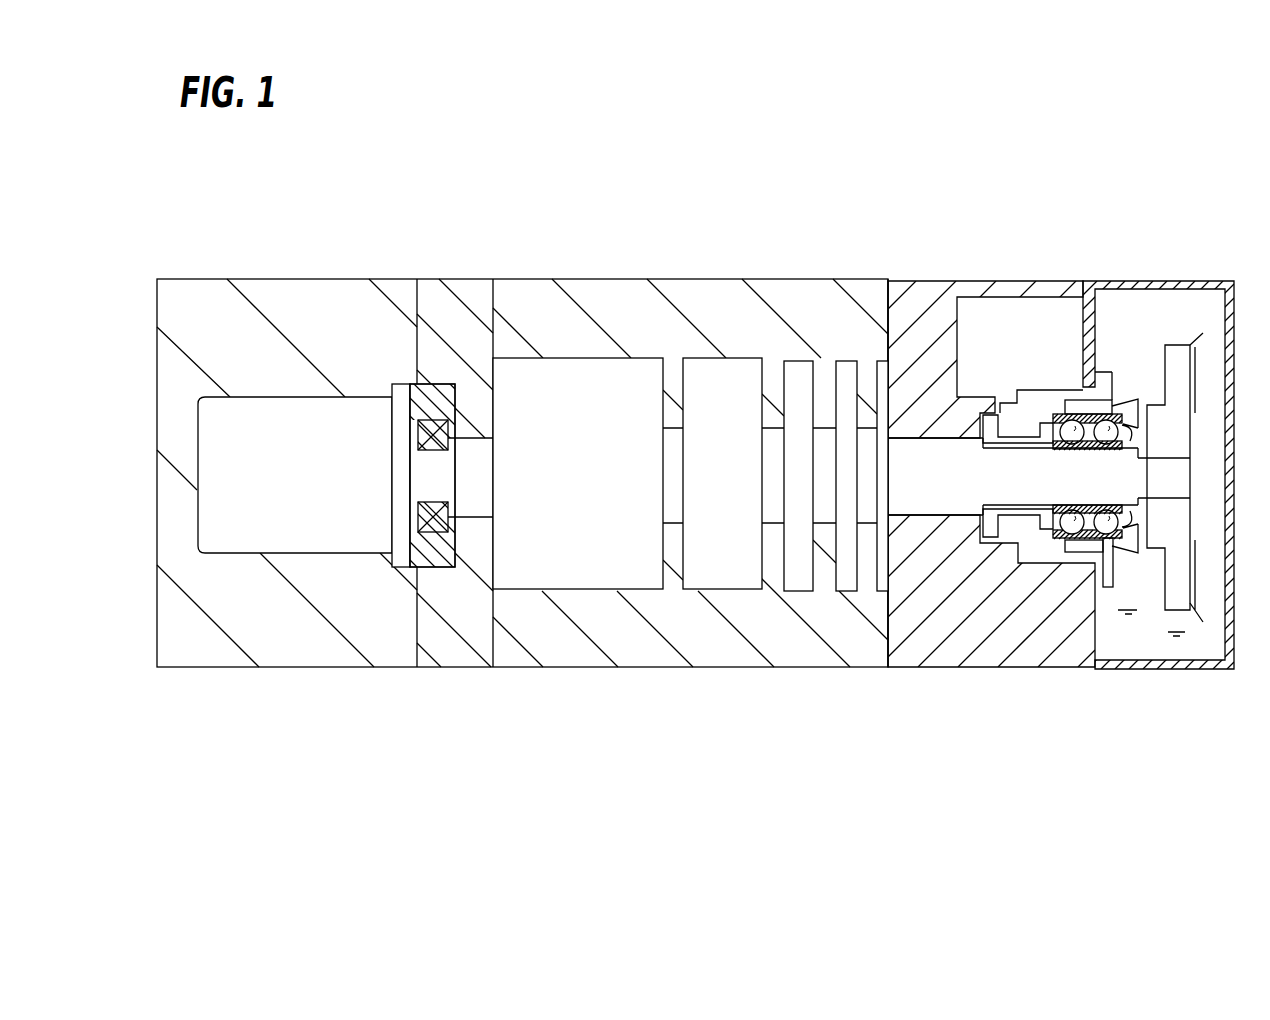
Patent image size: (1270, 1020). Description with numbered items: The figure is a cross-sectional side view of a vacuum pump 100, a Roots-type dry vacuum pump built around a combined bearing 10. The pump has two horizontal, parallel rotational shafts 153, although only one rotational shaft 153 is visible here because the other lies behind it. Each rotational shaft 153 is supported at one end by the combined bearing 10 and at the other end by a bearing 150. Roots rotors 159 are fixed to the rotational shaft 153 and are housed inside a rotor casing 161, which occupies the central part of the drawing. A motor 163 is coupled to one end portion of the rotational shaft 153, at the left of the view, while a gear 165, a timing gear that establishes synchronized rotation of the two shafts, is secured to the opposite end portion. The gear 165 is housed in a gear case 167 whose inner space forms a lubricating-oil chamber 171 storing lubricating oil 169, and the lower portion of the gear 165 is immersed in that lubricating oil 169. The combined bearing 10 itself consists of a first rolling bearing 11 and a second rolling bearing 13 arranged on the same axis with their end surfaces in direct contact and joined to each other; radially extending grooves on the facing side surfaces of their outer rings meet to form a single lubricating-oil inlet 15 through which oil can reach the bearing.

The vacuum pump 100 is at (967, 147).
The combined bearing 10 is at (1072, 406).
The lubricating-oil inlet 15 is at (1094, 406).
The first rolling bearing 11 is at (1065, 545).
The second rolling bearing 13 is at (1110, 548).
The bearing 150 is at (432, 410).
The rotational shaft 153 is at (472, 500).
The Roots rotor 159 is at (712, 568).
The rotor casing 161 is at (692, 294).
The motor 163 is at (294, 390).
The gear 165 is at (1174, 336).
The gear case 167 is at (1203, 336).
The lubricating oil 169 is at (1145, 642).
The lubricating-oil chamber 171 is at (1195, 642).